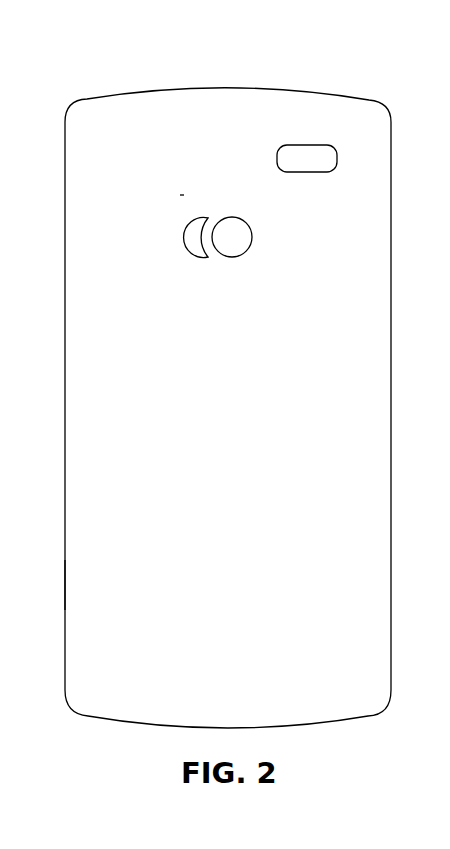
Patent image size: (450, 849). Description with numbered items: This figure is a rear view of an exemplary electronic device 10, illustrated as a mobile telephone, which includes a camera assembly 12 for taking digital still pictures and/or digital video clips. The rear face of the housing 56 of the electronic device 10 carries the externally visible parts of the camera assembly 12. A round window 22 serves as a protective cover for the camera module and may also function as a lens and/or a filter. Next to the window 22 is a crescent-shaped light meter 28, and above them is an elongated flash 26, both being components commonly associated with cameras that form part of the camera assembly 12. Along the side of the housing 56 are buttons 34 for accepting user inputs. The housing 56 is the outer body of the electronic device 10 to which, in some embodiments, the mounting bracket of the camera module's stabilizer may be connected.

The electronic device 10 is at (176, 70).
The camera assembly 12 is at (183, 190).
The window 22 is at (230, 238).
The flash 26 is at (286, 156).
The light meter 28 is at (193, 236).
The buttons 34 is at (0, 158).
The housing 56 is at (87, 582).